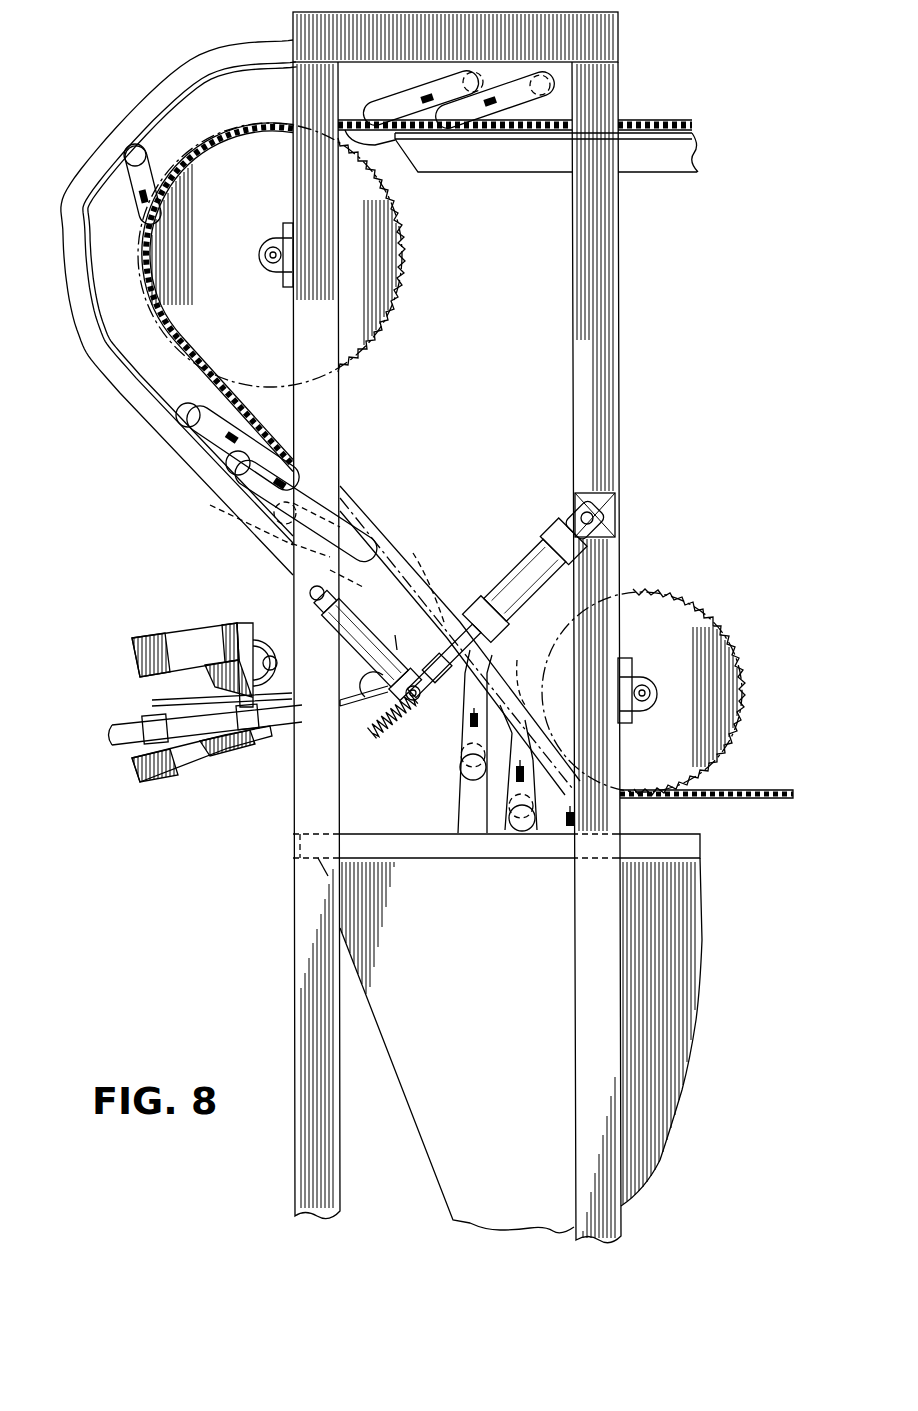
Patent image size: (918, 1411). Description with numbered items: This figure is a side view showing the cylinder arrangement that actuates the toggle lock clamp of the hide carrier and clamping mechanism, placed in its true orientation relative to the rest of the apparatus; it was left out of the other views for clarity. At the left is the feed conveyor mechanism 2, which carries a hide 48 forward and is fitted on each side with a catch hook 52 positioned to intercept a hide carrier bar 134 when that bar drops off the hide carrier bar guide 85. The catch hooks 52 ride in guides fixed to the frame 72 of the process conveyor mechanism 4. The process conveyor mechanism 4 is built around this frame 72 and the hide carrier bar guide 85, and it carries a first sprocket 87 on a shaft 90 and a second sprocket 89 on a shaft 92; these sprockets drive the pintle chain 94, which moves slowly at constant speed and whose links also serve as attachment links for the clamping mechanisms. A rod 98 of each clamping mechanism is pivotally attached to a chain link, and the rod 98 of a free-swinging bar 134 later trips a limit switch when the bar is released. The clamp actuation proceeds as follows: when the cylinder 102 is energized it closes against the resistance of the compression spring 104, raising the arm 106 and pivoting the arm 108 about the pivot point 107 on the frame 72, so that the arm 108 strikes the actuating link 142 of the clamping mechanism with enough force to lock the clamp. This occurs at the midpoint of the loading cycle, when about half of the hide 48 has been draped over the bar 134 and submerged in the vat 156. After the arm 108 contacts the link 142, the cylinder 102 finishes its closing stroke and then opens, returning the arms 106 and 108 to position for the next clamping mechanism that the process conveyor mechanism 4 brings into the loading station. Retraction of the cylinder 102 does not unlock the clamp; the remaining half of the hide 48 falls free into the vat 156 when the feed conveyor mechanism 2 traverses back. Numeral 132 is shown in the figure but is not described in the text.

The feed conveyor mechanism 2 is at (166, 630).
The process conveyor mechanism 4 is at (630, 465).
The hide 48 is at (500, 834).
The catch hook 52 is at (362, 708).
The frame 72 is at (613, 404).
The hide carrier bar guide 85 is at (117, 385).
The first sprocket 87 is at (232, 155).
The second sprocket 89 is at (140, 248).
The shaft 90 is at (266, 254).
The shaft 92 is at (641, 685).
The pintle chain 94 is at (662, 120).
The rod 98 is at (372, 132).
The cylinder 102 is at (515, 577).
The compression spring 104 is at (410, 725).
The arm 106 is at (420, 695).
The pivot point 107 is at (310, 594).
The arm 108 is at (365, 650).
The carriage roller unit 132 is at (395, 112).
The hide carrier bar 134 is at (138, 143).
The actuating link 142 is at (145, 198).
The vat 156 is at (421, 1071).